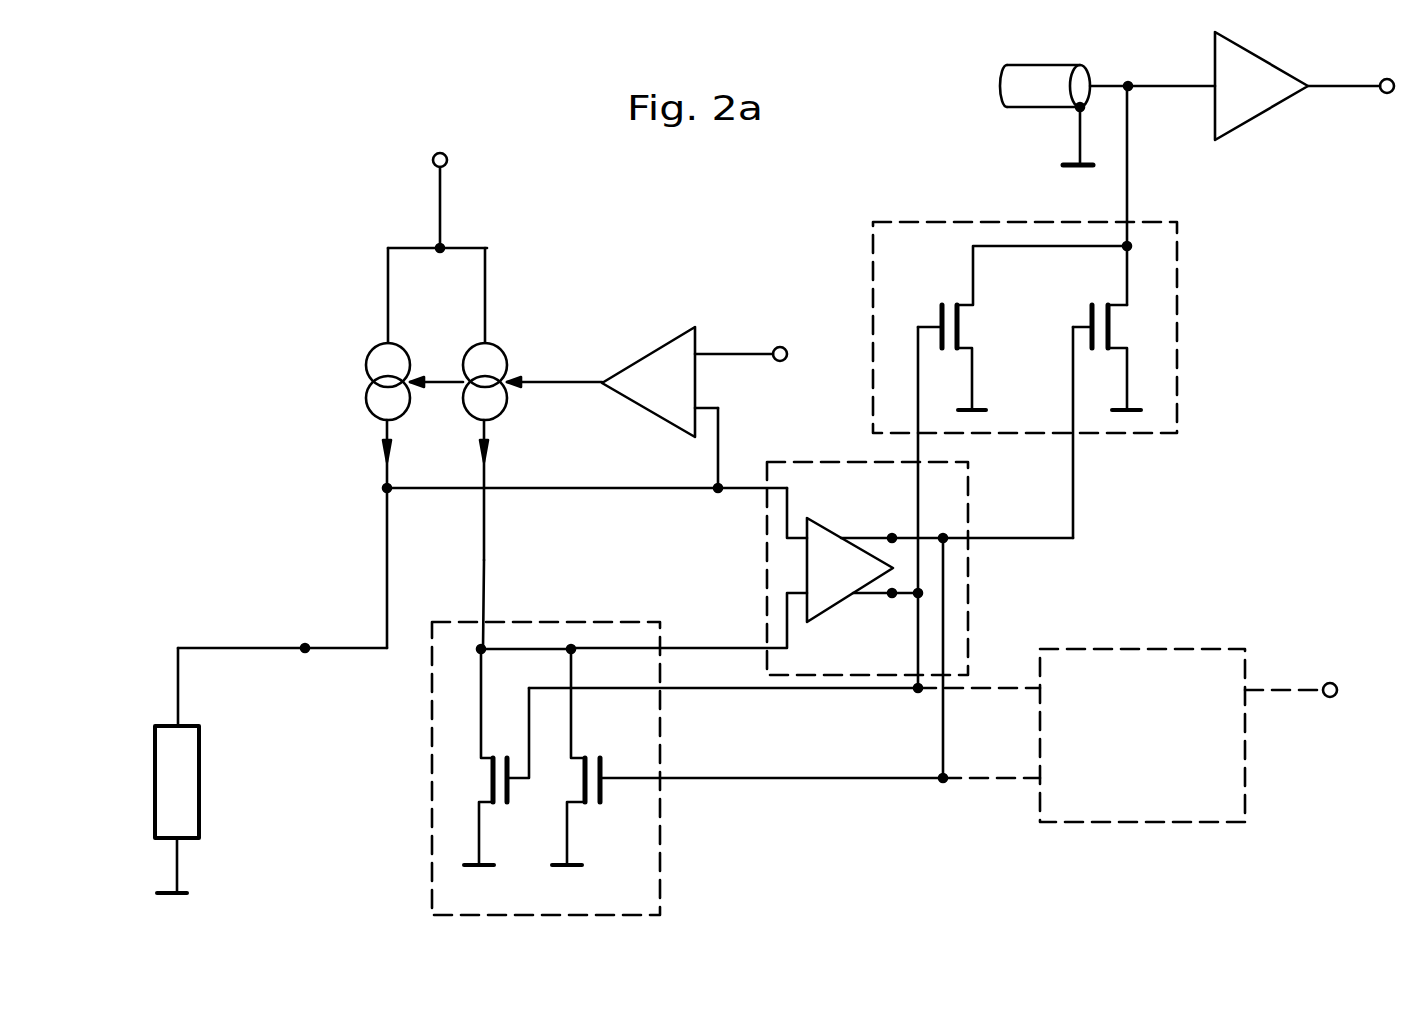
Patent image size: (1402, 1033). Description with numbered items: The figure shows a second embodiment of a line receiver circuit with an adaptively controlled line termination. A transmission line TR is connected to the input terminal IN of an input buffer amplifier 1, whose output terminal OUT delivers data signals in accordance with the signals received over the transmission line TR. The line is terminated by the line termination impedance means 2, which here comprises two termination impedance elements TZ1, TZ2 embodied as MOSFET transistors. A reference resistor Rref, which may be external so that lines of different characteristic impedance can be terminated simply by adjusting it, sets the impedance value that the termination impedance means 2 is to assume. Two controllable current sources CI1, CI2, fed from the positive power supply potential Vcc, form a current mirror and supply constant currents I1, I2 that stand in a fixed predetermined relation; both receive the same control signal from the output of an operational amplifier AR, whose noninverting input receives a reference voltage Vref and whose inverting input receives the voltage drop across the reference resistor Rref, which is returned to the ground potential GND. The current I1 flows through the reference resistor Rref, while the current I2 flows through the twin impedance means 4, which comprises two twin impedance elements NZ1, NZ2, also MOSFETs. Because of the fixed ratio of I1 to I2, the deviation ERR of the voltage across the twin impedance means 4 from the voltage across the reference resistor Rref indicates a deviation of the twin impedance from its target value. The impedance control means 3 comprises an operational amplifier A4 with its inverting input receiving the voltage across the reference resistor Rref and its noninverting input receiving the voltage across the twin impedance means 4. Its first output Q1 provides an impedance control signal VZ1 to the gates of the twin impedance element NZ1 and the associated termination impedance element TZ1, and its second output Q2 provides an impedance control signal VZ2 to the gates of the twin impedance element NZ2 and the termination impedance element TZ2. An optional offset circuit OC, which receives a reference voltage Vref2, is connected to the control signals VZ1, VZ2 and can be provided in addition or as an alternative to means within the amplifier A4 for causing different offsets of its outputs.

The input buffer amplifier 1 is at (1273, 58).
The line termination impedance means 2 is at (1178, 297).
The impedance control means 3 is at (970, 521).
The twin impedance means 4 is at (660, 849).
The transmission line TR is at (1012, 72).
The input terminal IN is at (1173, 89).
The output terminal OUT is at (1385, 95).
The positive power supply potential Vcc is at (459, 178).
The controllable current source CI1 is at (367, 358).
The controllable current source CI2 is at (500, 347).
The constant current I1 is at (398, 454).
The constant current I2 is at (495, 490).
The operational amplifier AR is at (656, 351).
The reference voltage Vref is at (741, 335).
The deviation ERR is at (485, 568).
The reference resistor Rref is at (190, 793).
The ground potential GND is at (194, 873).
The operational amplifier A4 is at (838, 530).
The first output Q1 is at (892, 598).
The second output Q2 is at (893, 533).
The termination impedance element TZ1 is at (948, 303).
The termination impedance element TZ2 is at (1100, 303).
The twin impedance element NZ1 is at (500, 804).
The twin impedance element NZ2 is at (590, 804).
The impedance control signal VZ1 is at (798, 690).
The impedance control signal VZ2 is at (868, 780).
The offset circuit OC is at (1245, 774).
The reference voltage Vref2 is at (1293, 705).